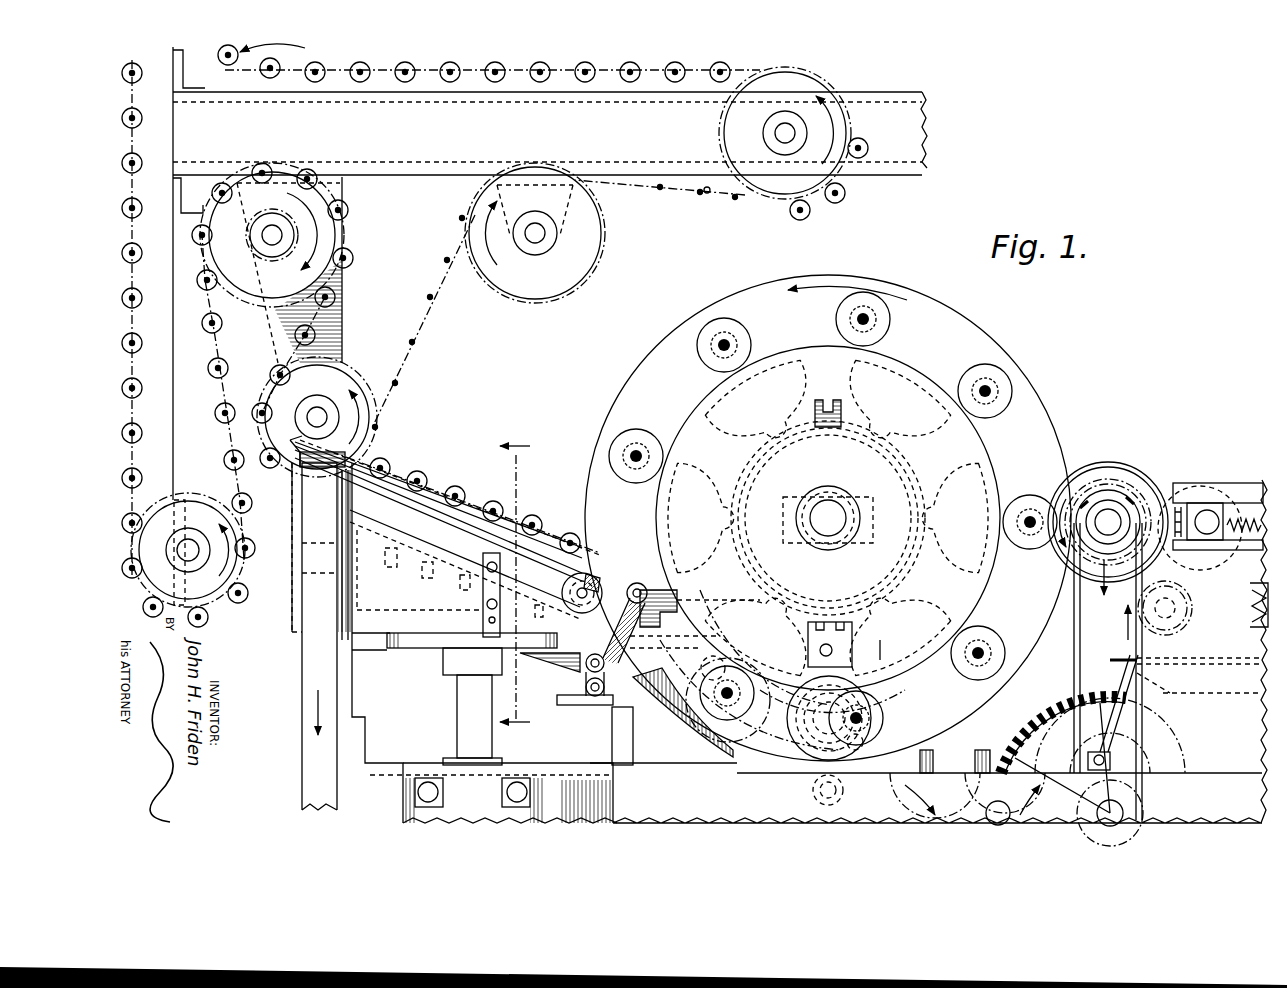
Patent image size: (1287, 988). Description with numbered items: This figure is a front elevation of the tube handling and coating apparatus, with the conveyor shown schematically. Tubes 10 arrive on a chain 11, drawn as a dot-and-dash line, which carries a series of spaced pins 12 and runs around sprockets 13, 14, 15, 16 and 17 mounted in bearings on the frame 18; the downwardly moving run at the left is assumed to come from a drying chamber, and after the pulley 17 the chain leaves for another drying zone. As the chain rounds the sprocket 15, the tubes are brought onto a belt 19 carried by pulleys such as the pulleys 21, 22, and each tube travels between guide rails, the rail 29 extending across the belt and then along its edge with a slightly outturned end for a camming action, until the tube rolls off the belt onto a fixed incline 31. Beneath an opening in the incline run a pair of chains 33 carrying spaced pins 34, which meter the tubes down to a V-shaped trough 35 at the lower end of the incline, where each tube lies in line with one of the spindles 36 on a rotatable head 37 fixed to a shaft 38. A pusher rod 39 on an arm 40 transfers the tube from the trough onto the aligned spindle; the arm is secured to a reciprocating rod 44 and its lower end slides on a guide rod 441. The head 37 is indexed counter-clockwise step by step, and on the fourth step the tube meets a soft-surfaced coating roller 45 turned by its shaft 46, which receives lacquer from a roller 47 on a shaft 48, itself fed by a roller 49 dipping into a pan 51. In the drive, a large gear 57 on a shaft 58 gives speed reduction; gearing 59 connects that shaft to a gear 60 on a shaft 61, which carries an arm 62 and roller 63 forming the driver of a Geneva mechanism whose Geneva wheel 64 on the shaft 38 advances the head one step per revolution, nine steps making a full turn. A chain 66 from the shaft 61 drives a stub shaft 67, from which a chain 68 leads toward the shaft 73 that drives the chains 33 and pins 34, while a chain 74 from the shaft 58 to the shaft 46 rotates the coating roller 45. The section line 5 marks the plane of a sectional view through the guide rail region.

The section line 5- 5 is at (515, 585).
The tubes 10 is at (136, 108).
The chain 11 is at (566, 93).
The pins 12 is at (710, 194).
The sprocket 13 is at (207, 590).
The sprocket 14 is at (312, 270).
The sprocket 15 is at (353, 440).
The sprocket 16 is at (530, 290).
The sprocket 17 is at (785, 183).
The frame 18 is at (174, 462).
The belt 19 is at (305, 623).
The pulley 21 is at (294, 576).
The pulley 22 is at (302, 523).
The guide rail 29 is at (297, 468).
The fixed incline 31 is at (445, 515).
The chains 33 is at (600, 580).
The pins 34 is at (496, 481).
The V-shaped trough 35 is at (668, 597).
The spindles 36 is at (980, 388).
The rotatable head 37 is at (828, 518).
The shaft 38 is at (828, 508).
The pusher rod 39 is at (637, 583).
The arm 40 is at (655, 627).
The rod 44 is at (585, 668).
The guide rod 441 is at (590, 698).
The roller 45 is at (1103, 464).
The shaft 46 is at (1108, 528).
The roller 47 is at (1236, 495).
The shaft 48 is at (1203, 514).
The roller 49 is at (1205, 588).
The pan 51 is at (1215, 698).
The large gear 57 is at (1062, 722).
The shaft 58 is at (1126, 808).
The gearing 59 is at (937, 782).
The gear 60 is at (888, 698).
The shaft 61 is at (820, 728).
The arm 62 is at (858, 750).
The roller 63 is at (812, 800).
The Geneva wheel 64 is at (950, 572).
The chain 66 is at (795, 644).
The stub shaft 67 is at (702, 667).
The chain 68 is at (680, 710).
The shaft 73 is at (592, 574).
The chain 74 is at (1135, 638).